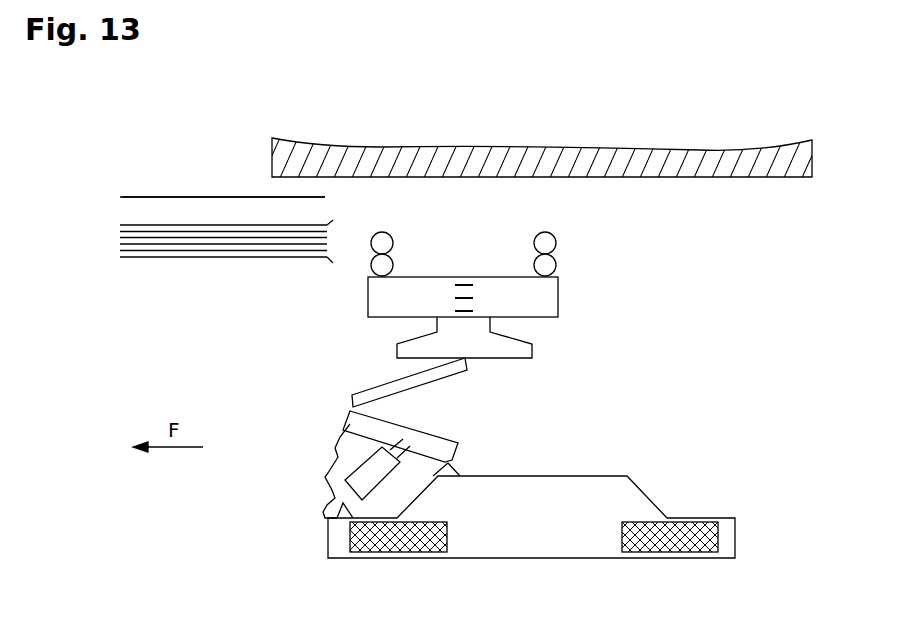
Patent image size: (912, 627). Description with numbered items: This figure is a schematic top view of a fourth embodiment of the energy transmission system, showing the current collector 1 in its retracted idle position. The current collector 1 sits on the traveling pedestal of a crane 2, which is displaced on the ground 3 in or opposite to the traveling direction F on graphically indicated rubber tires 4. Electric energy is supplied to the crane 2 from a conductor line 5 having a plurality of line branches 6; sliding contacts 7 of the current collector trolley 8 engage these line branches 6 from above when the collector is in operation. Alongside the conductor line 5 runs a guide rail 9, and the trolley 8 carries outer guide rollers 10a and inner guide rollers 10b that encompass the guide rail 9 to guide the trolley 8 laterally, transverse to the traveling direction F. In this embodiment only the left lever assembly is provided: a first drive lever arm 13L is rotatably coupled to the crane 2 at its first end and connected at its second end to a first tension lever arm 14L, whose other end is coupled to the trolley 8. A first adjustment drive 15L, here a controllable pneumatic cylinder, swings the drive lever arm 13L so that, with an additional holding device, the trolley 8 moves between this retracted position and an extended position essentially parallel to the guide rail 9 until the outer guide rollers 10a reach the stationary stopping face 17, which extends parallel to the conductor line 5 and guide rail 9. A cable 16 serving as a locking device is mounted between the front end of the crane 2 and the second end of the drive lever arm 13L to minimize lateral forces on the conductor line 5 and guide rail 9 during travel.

The current collector 1 is at (675, 376).
The crane 2 is at (539, 540).
The ground 3 is at (589, 522).
The rubber tires 4 is at (350, 541).
The conductor line 5 is at (163, 183).
The line branches 6 is at (175, 250).
The sliding contacts 7 is at (470, 315).
The current collector trolley 8 is at (558, 305).
The guide rail 9 is at (245, 197).
The outer guide rollers 10a is at (536, 239).
The inner guide rollers 10b is at (535, 264).
The first drive lever arm 13L is at (350, 411).
The first tension lever arm 14L is at (368, 392).
The first adjustment drive 15L is at (353, 495).
The cable 16 is at (338, 456).
The stopping face 17 is at (800, 177).